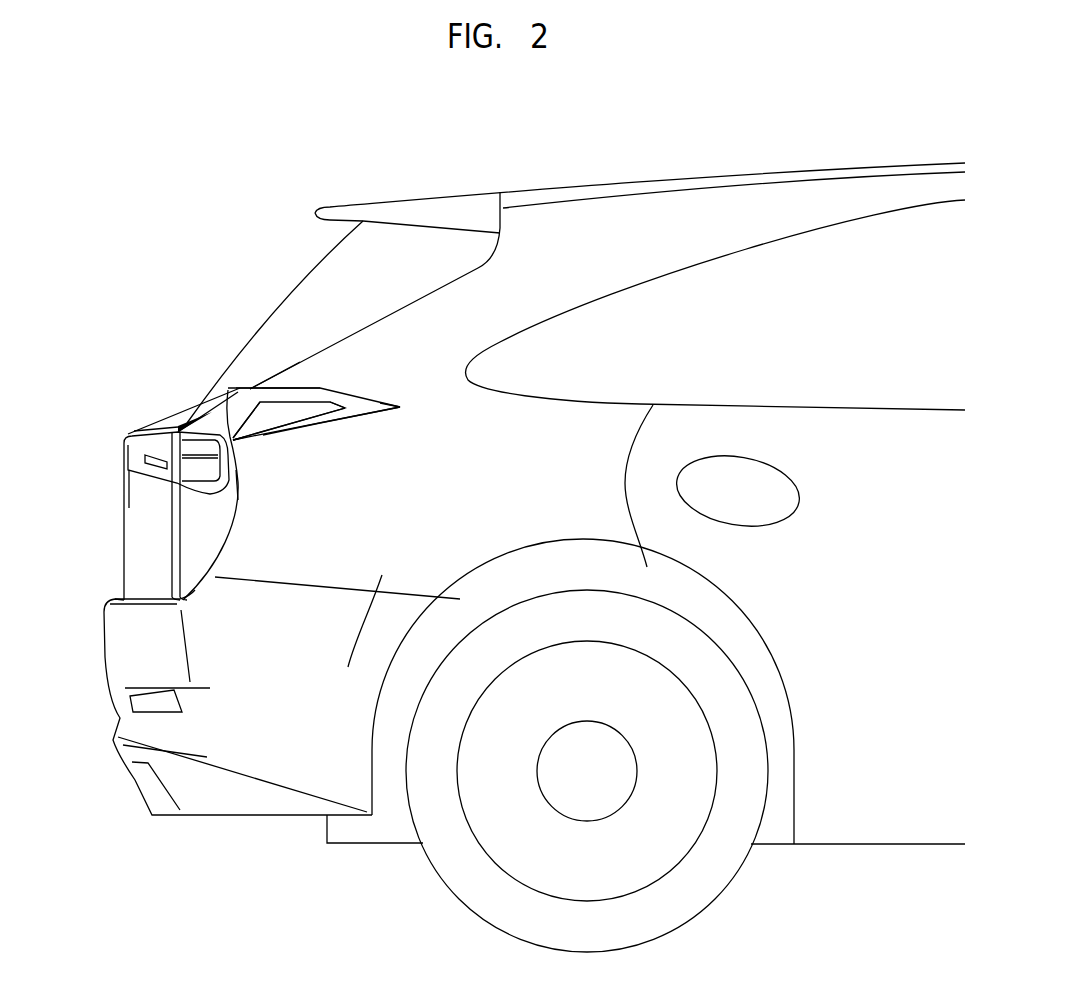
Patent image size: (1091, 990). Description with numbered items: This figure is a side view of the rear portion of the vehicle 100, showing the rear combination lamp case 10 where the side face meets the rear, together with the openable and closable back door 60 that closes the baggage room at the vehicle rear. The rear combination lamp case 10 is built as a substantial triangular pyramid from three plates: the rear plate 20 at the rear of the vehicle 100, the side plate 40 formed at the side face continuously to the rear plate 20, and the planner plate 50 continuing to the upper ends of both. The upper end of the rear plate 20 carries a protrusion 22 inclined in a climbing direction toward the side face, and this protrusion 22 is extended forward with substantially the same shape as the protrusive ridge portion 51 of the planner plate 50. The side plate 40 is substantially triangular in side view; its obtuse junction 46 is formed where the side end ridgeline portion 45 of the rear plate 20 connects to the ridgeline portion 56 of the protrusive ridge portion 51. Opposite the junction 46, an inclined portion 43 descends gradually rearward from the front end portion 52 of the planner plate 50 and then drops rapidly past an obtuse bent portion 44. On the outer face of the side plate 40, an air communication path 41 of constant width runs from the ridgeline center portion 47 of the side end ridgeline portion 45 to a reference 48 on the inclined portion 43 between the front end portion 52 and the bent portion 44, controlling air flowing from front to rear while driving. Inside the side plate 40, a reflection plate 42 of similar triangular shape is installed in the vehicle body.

The vehicle 100 is at (127, 168).
The rear combination lamp case 10 is at (172, 369).
The rear plate 20 is at (194, 511).
The protrusion 22 is at (228, 387).
The side plate 40 is at (372, 420).
The air communication path 41 is at (240, 444).
The reflection plate 42 is at (328, 408).
The inclined portion 43 is at (322, 423).
The bent portion 44 is at (243, 450).
The side end ridgeline portion 45 is at (229, 502).
The junction 46 is at (247, 387).
The ridgeline center portion 47 is at (235, 448).
The reference 48 is at (270, 437).
The planner plate 50 is at (400, 362).
The protrusive ridge portion 51 is at (320, 392).
The front end portion 52 is at (397, 407).
The ridgeline portion 56 is at (277, 387).
The back door 60 is at (123, 575).